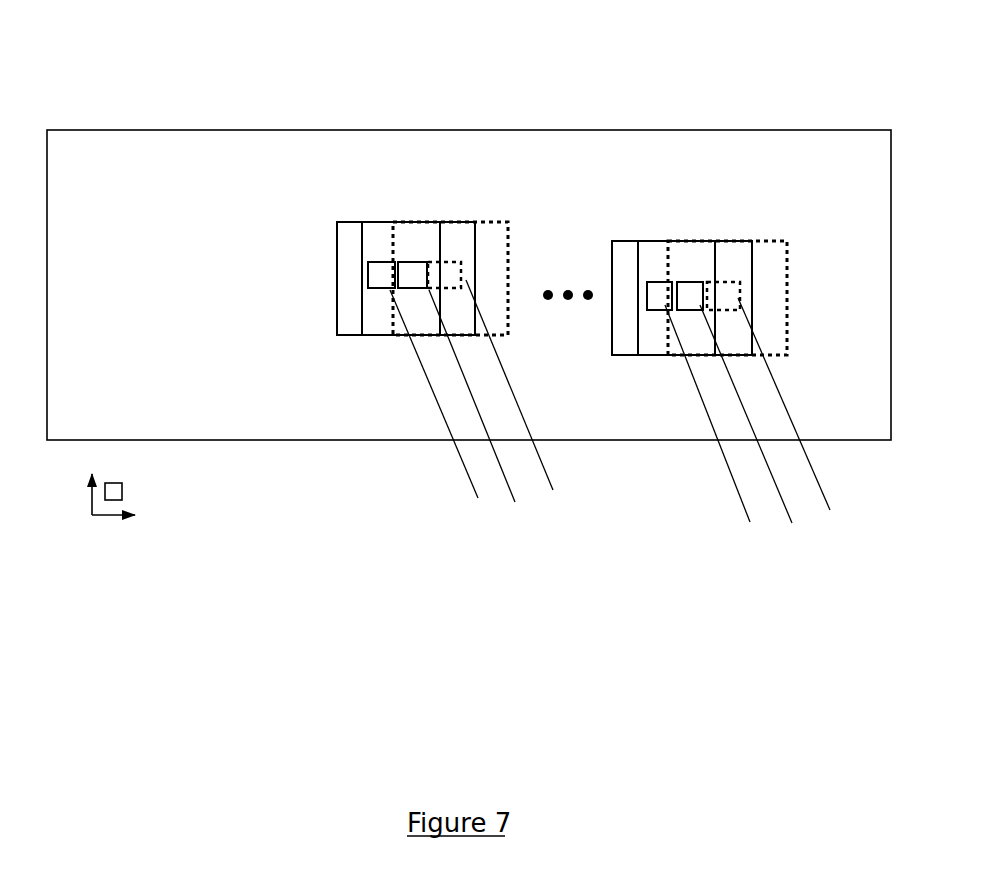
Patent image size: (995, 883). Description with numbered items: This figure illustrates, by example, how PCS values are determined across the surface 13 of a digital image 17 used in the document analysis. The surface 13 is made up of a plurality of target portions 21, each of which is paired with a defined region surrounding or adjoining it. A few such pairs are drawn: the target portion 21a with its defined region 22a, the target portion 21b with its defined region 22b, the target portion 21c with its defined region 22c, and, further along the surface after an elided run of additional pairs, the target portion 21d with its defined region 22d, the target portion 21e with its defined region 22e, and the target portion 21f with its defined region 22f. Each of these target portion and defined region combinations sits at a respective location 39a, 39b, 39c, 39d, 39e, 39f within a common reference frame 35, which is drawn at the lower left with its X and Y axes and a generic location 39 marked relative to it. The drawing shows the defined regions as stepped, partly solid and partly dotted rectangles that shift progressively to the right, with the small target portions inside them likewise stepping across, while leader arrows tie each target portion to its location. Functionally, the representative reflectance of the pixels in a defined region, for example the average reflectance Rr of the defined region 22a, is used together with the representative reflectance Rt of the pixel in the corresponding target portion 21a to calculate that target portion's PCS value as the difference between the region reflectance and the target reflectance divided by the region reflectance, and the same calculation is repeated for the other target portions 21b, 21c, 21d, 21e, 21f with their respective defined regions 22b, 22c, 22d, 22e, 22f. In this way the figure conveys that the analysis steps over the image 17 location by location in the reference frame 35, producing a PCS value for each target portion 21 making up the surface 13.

The surface 13 is at (861, 181).
The digital image 17 is at (568, 84).
The target portion 21 is at (270, 145).
The defined region 22a is at (338, 242).
The defined region 22b is at (383, 222).
The defined region 22c is at (503, 222).
The defined region 22d is at (613, 260).
The defined region 22e is at (662, 240).
The defined region 22f is at (780, 240).
The target portion 21a is at (387, 280).
The target portion 21b is at (425, 280).
The target portion 21c is at (462, 274).
The target portion 21d is at (665, 300).
The target portion 21e is at (700, 300).
The target portion 21f is at (740, 294).
The location 39a is at (434, 403).
The location 39b is at (481, 411).
The location 39c is at (524, 396).
The location 39d is at (707, 422).
The location 39e is at (754, 430).
The location 39f is at (795, 415).
The location 39 is at (126, 498).
The reference frame 35 is at (107, 517).